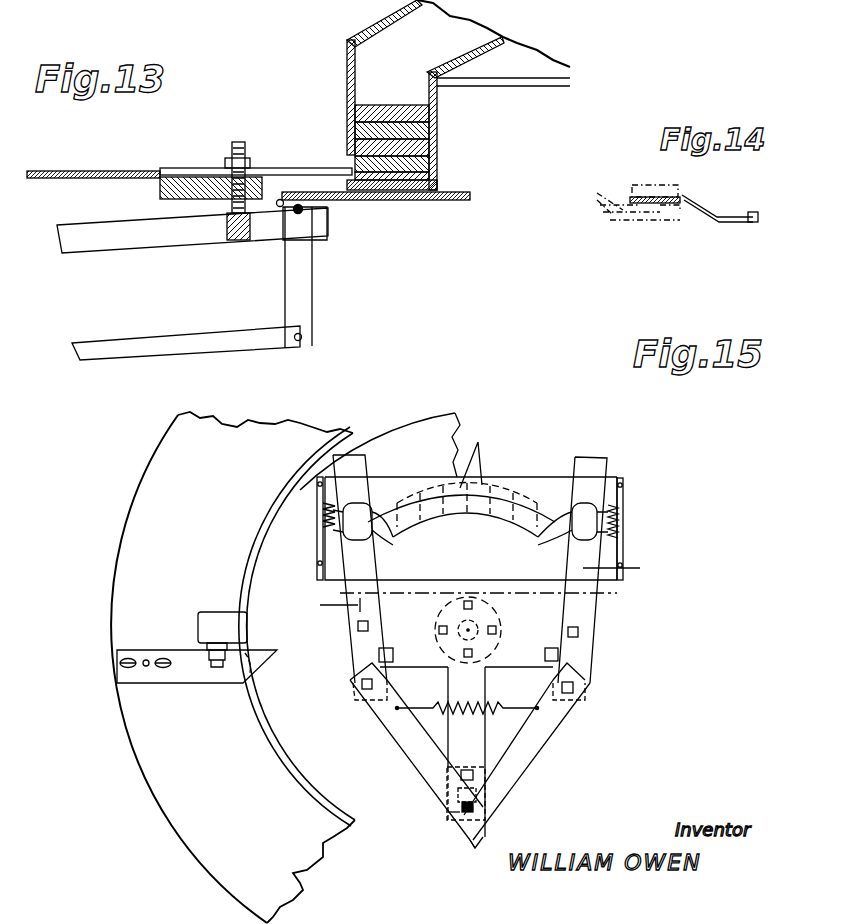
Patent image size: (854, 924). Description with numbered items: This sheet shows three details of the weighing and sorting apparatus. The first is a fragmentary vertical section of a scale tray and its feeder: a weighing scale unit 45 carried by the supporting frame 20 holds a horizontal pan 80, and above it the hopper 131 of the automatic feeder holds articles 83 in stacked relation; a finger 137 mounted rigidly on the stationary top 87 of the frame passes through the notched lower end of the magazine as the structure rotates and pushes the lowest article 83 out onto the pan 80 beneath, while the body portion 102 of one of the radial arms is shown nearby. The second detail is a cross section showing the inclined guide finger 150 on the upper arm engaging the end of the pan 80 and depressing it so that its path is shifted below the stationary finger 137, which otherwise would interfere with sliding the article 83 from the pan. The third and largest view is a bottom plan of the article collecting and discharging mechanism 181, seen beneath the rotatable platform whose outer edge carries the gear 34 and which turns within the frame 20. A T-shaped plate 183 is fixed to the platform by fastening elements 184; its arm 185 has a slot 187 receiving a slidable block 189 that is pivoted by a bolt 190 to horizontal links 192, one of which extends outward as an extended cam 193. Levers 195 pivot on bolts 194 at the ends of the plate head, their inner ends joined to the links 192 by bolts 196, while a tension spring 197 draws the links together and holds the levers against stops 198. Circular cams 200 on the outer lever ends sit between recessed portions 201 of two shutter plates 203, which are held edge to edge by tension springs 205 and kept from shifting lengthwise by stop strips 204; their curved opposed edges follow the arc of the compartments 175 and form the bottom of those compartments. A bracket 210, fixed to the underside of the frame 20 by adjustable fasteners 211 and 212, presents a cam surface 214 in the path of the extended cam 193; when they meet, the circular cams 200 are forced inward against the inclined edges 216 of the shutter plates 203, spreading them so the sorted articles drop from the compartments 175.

In FIG. 15, the supporting frame 20 is at (127, 768).
In FIG. 15, the gear 34 is at (393, 423).
In FIG. 13, the weighing scale unit 45 is at (83, 218).
In FIG. 13, the pan 80 is at (470, 193).
In FIG. 14, the pan 80 is at (665, 196).
In FIG. 13, the article 83 is at (401, 120).
In FIG. 14, the article 83 is at (650, 184).
In FIG. 13, the horizontal top 87 is at (105, 171).
In FIG. 13, the body portion 102 is at (241, 133).
In FIG. 13, the hopper 131 is at (341, 93).
In FIG. 13, the finger 137 is at (303, 168).
In FIG. 14, the inclined guide finger 150 is at (695, 203).
In FIG. 15, the compartment 175 is at (479, 453).
In FIG. 15, the article collecting and discharging mechanism 181 is at (600, 591).
In FIG. 15, the T-shaped plate 183 is at (595, 653).
In FIG. 15, the fastening elements 184 is at (442, 628).
In FIG. 15, the arm 185 is at (487, 733).
In FIG. 15, the slot 187 is at (467, 770).
In FIG. 15, the slidable block 189 is at (450, 813).
In FIG. 15, the bolt 190 is at (474, 807).
In FIG. 15, the horizontal links 192 is at (392, 745).
In FIG. 15, the extended cam 193 is at (474, 845).
In FIG. 15, the bolts 194 is at (358, 627).
In FIG. 15, the levers 195 is at (479, 587).
In FIG. 15, the bolts 196 is at (362, 685).
In FIG. 15, the tension spring 197 is at (433, 708).
In FIG. 15, the stops 198 is at (393, 653).
In FIG. 15, the circular cams 200 is at (382, 489).
In FIG. 15, the recessed portions 201 is at (323, 527).
In FIG. 15, the shutter plates 203 is at (513, 477).
In FIG. 15, the stop strips 204 is at (320, 567).
In FIG. 15, the tension springs 205 is at (327, 507).
In FIG. 15, the bracket 210 is at (185, 682).
In FIG. 15, the adjustable fastener 211 is at (158, 658).
In FIG. 15, the adjustable fastener 212 is at (220, 668).
In FIG. 15, the cam surface 214 is at (260, 660).
In FIG. 15, the inclined edges 216 is at (472, 539).